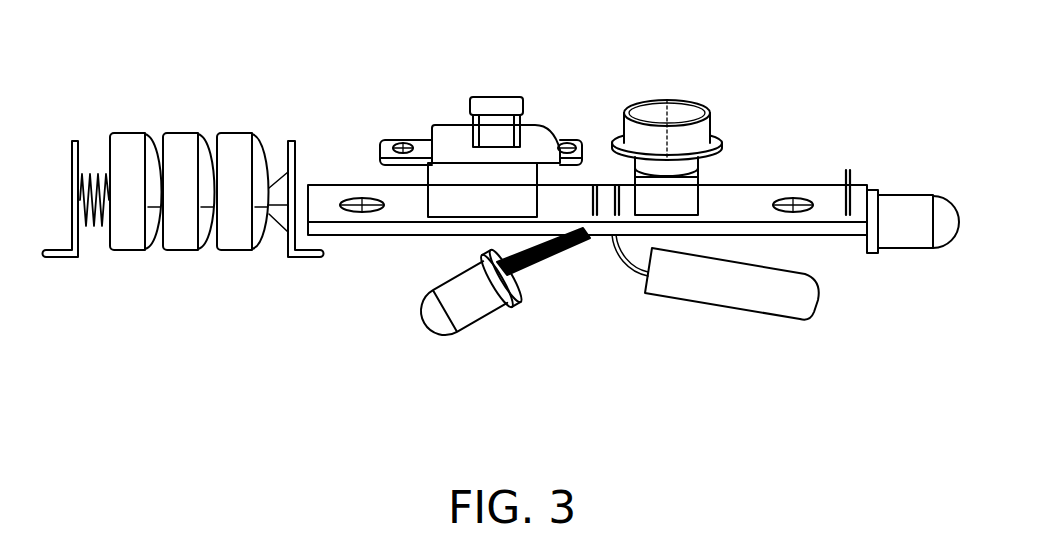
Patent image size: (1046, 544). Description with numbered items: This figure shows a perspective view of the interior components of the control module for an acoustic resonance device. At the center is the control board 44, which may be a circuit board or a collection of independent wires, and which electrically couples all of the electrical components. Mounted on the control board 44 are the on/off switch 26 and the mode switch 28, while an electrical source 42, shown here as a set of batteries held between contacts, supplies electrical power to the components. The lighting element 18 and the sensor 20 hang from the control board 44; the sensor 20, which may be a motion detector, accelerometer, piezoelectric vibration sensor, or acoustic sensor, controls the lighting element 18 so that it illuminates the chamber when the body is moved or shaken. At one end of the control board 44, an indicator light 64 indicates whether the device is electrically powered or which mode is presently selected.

The lighting element 18 is at (463, 335).
The sensor 20 is at (787, 320).
The on/off switch 26 is at (498, 97).
The mode switch 28 is at (687, 100).
The electrical source 42 is at (177, 250).
The control board 44 is at (743, 185).
The indicator light 64 is at (900, 253).